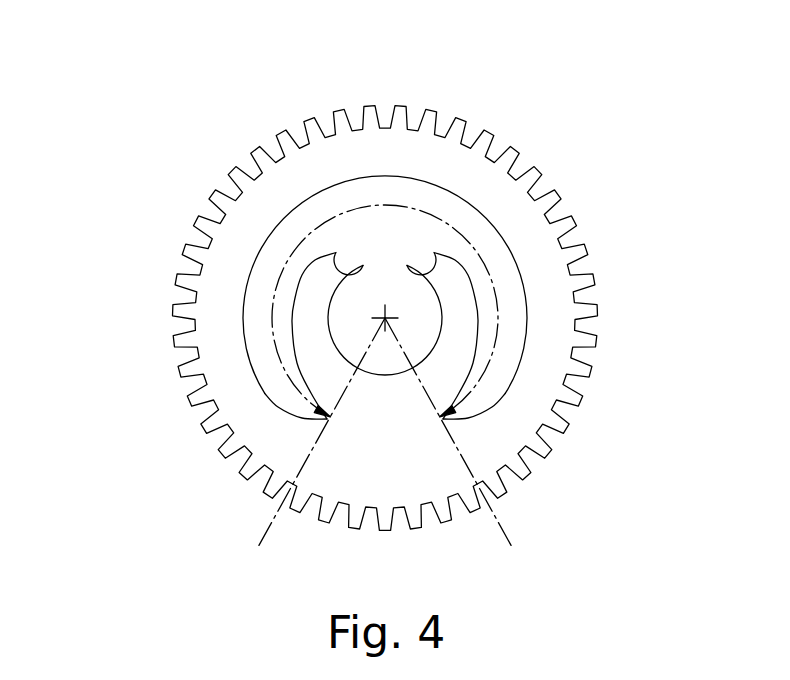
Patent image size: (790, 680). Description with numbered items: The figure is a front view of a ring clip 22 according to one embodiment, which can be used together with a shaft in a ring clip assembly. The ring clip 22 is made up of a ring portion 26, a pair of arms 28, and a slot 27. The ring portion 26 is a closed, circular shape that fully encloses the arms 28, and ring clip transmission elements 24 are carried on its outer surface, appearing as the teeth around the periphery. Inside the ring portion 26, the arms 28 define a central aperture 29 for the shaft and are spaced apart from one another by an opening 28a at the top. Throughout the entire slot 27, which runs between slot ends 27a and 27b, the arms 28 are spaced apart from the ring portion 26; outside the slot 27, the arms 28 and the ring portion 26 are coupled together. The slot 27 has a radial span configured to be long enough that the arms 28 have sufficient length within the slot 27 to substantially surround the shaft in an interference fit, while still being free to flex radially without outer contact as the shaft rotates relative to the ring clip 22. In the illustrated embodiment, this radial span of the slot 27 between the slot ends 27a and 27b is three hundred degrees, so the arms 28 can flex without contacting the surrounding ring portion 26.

The ring clip 22 is at (139, 173).
The ring clip transmission elements 24 is at (473, 101).
The ring portion 26 is at (220, 309).
The slot 27 is at (456, 202).
The slot end 27a is at (267, 530).
The slot end 27b is at (502, 529).
The arms 28 is at (312, 342).
The opening 28a is at (387, 236).
The aperture 29 is at (432, 349).